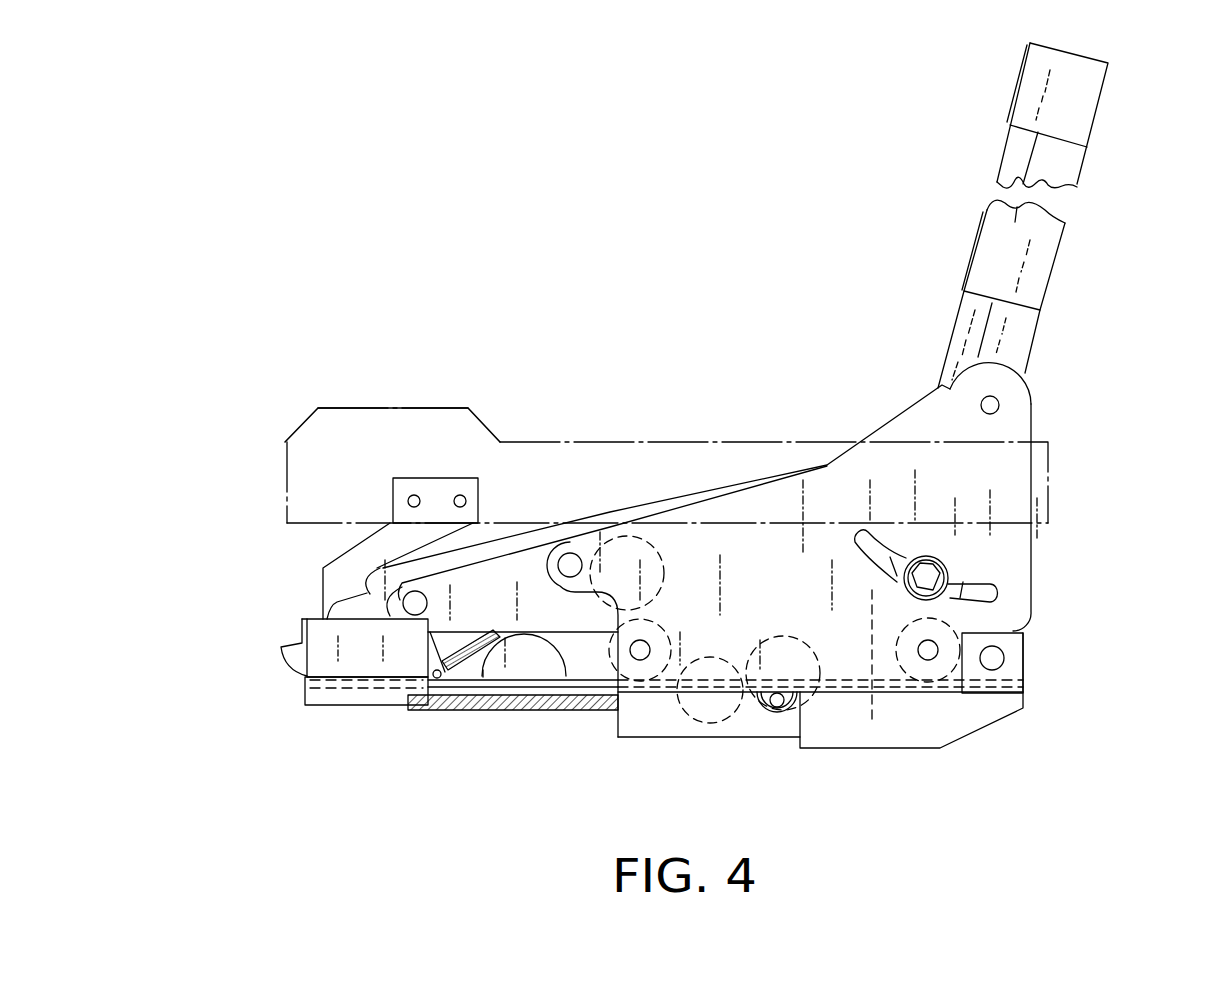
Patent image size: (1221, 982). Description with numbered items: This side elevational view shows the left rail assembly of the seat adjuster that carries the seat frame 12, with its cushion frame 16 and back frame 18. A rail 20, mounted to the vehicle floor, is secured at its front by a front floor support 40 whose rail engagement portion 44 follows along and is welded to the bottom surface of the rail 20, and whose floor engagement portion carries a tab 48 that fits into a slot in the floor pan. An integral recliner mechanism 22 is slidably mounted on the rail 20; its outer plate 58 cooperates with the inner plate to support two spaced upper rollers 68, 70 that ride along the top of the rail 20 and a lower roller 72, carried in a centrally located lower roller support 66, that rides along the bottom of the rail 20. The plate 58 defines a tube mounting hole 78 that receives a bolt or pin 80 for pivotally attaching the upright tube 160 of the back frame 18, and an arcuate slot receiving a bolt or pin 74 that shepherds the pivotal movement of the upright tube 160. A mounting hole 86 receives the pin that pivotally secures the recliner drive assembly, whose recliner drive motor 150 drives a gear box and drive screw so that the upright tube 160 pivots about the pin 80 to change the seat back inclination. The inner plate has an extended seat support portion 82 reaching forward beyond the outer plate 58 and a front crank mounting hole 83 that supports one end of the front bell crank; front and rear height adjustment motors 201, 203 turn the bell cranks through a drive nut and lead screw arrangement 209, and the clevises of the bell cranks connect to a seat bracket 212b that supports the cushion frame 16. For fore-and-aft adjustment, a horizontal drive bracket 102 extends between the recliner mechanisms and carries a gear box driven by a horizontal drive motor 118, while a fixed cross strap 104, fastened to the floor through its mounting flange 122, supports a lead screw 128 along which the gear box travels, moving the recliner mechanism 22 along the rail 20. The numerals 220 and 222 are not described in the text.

The seat frame 12 is at (1088, 159).
The cushion frame 16 is at (397, 408).
The back frame 18 is at (1002, 150).
The rail 20 is at (462, 686).
The integral recliner mechanism 22 is at (1032, 428).
The front floor support 40 is at (335, 708).
The rail engagement portion 44 is at (377, 708).
The tab 48 is at (282, 663).
The outer plate 58 is at (1036, 572).
The lower roller support 66 is at (763, 720).
The upper roller 68 is at (630, 717).
The upper roller 70 is at (945, 622).
The lower roller 72 is at (790, 720).
The bolt or pin 74 is at (958, 569).
The tube mounting hole 78 is at (1000, 392).
The bolt or pin 80 is at (1000, 404).
The extended seat support portion 82 is at (372, 567).
The front crank mounting hole 83 is at (337, 602).
The mounting hole 86 is at (572, 552).
The horizontal drive bracket 102 is at (648, 737).
The fixed cross strap 104 is at (1025, 698).
The horizontal drive motor 118 is at (808, 705).
The mounting flange 122 is at (995, 656).
The lead screw 128 is at (477, 710).
The recliner drive motor 150 is at (662, 571).
The upright tube 160 is at (1024, 338).
The front height adjustment motor 201 is at (490, 710).
The rear height adjustment motor 203 is at (698, 720).
The drive nut and lead screw arrangement 209 is at (448, 640).
The seat bracket 212b is at (380, 568).
The grip section 220 is at (1087, 102).
The collar 222 is at (1040, 274).